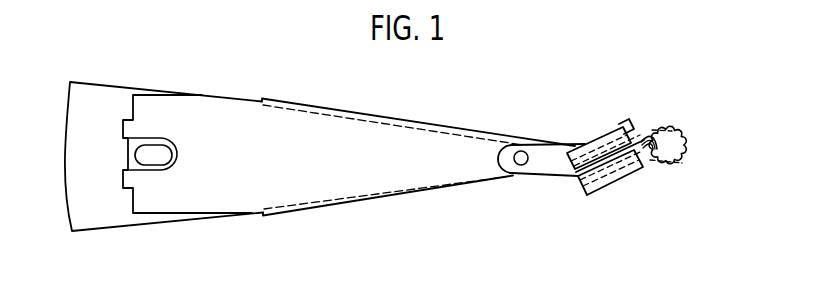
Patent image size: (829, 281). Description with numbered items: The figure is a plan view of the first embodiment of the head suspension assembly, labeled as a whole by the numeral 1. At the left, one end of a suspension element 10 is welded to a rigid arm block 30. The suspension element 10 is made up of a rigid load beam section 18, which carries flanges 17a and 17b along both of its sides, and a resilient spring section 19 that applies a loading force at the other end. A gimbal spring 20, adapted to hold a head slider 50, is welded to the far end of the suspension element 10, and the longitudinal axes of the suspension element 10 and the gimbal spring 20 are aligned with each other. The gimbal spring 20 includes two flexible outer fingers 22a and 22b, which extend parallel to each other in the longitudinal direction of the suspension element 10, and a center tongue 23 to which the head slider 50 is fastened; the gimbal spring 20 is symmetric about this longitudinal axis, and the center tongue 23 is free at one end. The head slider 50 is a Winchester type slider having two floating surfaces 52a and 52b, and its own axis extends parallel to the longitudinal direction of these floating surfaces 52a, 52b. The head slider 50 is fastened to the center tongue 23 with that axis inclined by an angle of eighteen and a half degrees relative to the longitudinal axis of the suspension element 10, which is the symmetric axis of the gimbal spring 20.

The surgical instrument 1 is at (232, 233).
The suspension element 10 is at (427, 197).
The flange 17a is at (313, 102).
The flange 17b is at (333, 208).
The rigid load beam section 18 is at (375, 140).
The resilient spring section 19 is at (223, 105).
The gimbal spring 20 is at (543, 153).
The flexible outer finger 22a is at (615, 127).
The flexible outer finger 22b is at (630, 180).
The center tongue 23 is at (640, 160).
The rigid arm block 30 is at (98, 92).
The head slider 50 is at (625, 142).
The floating surface 52a is at (600, 133).
The floating surface 52b is at (600, 192).